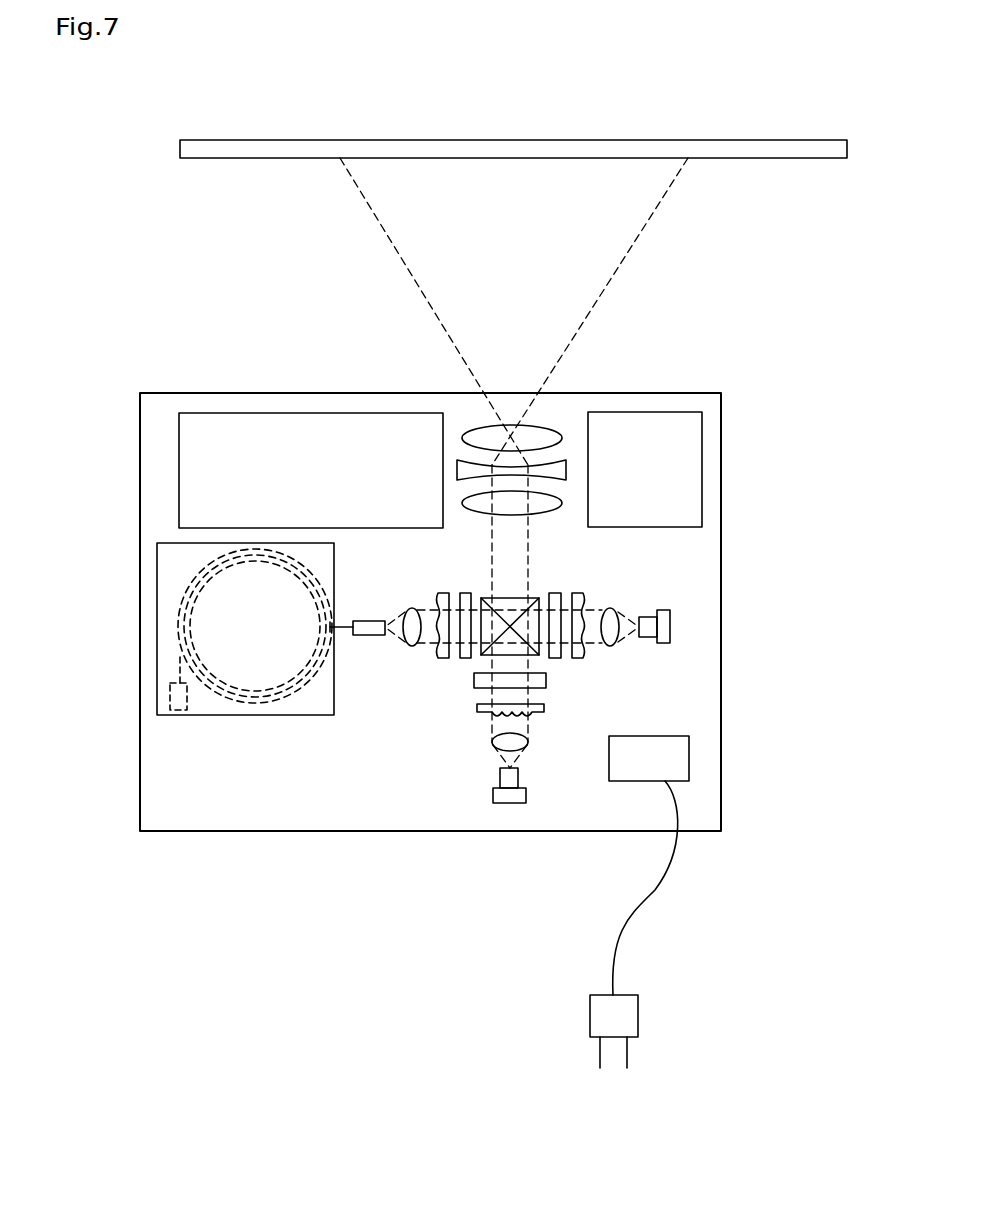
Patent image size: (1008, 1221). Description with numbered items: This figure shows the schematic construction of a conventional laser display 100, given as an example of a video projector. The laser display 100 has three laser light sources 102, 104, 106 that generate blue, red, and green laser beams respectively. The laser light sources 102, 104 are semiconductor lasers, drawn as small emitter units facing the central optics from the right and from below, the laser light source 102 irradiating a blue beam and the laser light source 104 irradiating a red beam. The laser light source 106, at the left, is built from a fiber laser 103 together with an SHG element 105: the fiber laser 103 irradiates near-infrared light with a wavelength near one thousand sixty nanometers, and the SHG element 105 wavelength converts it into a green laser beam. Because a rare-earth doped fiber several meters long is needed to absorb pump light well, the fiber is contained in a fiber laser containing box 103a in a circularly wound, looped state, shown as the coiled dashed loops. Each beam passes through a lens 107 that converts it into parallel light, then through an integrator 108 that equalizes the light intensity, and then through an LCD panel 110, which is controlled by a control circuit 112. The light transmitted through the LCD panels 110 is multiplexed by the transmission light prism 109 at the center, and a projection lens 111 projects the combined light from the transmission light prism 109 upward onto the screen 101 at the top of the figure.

The laser display 100 is at (717, 990).
The screen 101 is at (800, 147).
The laser light source 102 is at (668, 626).
The fiber laser 103 is at (213, 697).
The fiber laser containing box 103a is at (158, 697).
The laser light source 104 is at (502, 803).
The SHG element 105 is at (370, 637).
The laser light source 106 is at (372, 883).
The lens 107 is at (409, 612).
The integrator 108 is at (445, 596).
The transmission light prism 109 is at (512, 605).
The LCD panel 110 is at (552, 600).
The projection lens 111 is at (556, 465).
The control circuit 112 is at (366, 422).